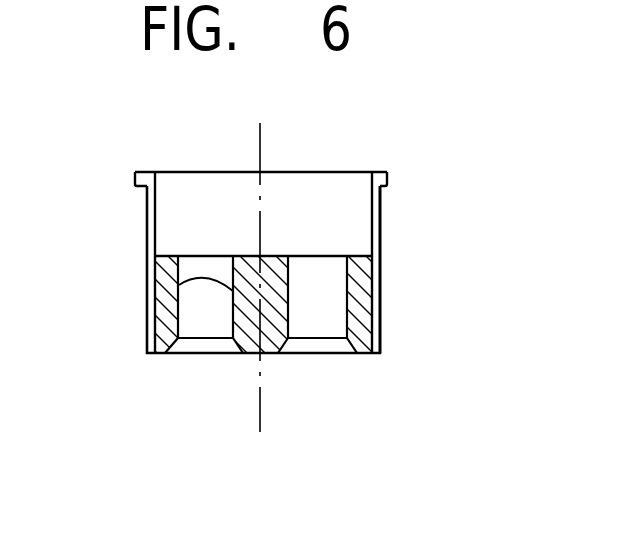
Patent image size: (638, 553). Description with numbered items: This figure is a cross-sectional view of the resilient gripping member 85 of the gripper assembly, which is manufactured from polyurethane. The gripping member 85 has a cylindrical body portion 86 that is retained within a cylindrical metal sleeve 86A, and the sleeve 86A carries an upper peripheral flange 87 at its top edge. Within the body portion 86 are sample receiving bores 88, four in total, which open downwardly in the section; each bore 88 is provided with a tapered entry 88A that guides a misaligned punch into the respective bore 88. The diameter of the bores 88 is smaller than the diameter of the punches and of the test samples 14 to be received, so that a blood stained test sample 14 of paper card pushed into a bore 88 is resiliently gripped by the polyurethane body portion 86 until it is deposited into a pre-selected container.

The test sample 14 is at (203, 281).
The resilient gripping member 85 is at (380, 322).
The cylindrical body portion 86 is at (357, 281).
The cylindrical metal sleeve 86A is at (380, 220).
The upper peripheral flange 87 is at (387, 173).
The sample receiving bores 88 is at (199, 290).
The tapered entry 88A is at (310, 345).